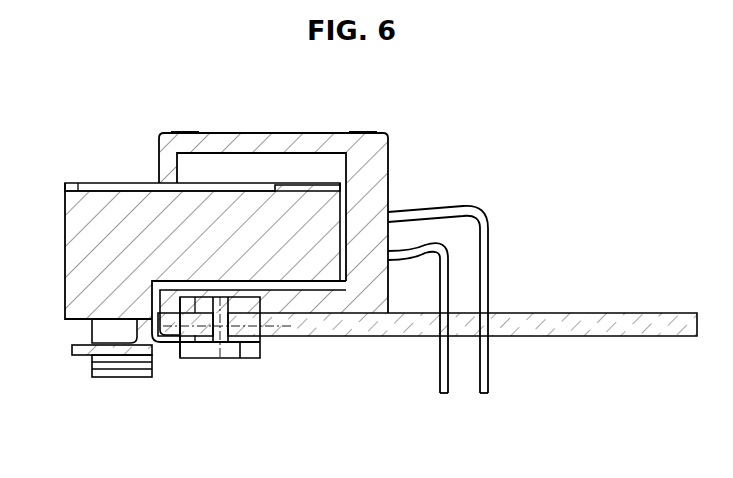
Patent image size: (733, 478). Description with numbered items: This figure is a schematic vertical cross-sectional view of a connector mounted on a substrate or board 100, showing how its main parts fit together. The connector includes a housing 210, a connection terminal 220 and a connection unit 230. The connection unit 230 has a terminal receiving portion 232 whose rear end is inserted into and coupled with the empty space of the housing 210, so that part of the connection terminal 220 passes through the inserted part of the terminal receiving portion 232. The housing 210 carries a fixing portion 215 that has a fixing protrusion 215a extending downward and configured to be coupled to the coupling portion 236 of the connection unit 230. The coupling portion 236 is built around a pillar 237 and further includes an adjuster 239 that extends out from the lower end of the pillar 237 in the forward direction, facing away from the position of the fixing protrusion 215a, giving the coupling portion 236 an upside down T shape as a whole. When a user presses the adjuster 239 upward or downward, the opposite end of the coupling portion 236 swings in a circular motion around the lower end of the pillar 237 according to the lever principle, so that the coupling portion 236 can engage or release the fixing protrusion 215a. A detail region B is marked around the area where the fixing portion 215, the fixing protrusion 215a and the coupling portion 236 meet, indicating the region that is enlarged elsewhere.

The substrate / board 100 is at (600, 312).
The housing 210 is at (265, 132).
The fixing portion 215 is at (339, 397).
The fixing protrusion 215a is at (220, 322).
The connection terminal 220 is at (445, 207).
The connection unit 230 is at (55, 201).
The terminal receiving portion 232 is at (65, 249).
The coupling portion 236 is at (176, 348).
The pillar 237 is at (138, 330).
The adjuster 239 is at (72, 349).
The detail region B is at (220, 360).